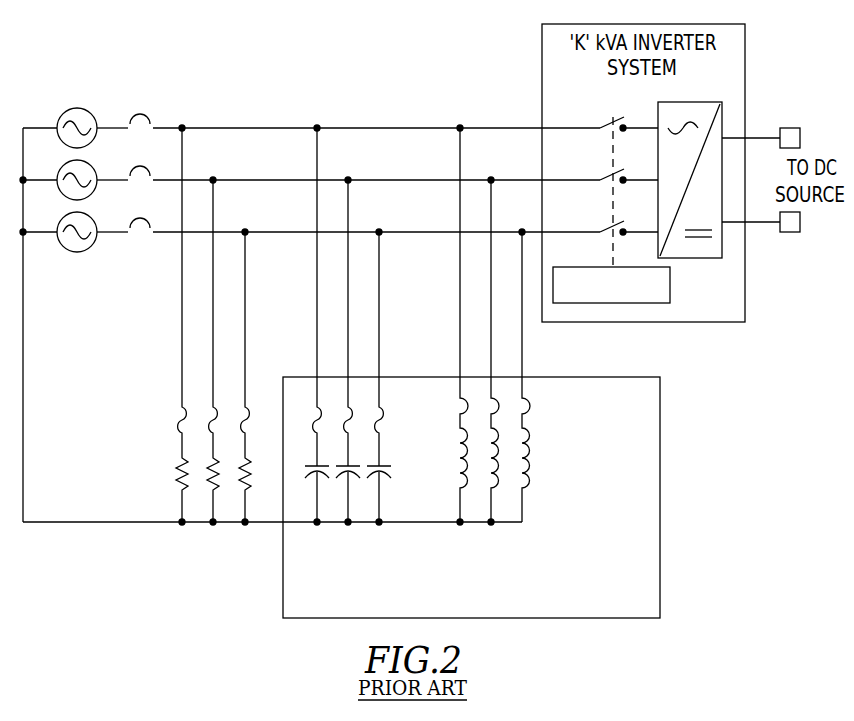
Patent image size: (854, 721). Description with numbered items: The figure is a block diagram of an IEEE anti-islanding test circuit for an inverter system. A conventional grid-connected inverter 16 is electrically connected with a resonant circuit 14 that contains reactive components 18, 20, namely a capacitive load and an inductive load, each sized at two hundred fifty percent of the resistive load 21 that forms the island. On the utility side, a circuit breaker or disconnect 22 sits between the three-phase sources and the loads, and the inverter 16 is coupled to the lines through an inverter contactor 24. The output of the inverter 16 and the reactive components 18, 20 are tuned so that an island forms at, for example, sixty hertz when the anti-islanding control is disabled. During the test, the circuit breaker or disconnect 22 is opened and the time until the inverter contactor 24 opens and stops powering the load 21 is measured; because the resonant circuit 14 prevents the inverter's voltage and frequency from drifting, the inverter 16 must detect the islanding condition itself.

The resonant circuit 14 is at (660, 533).
The inverter 16 is at (722, 102).
The reactive component 18 is at (406, 404).
The reactive component 20 is at (545, 399).
The load 21 is at (166, 402).
The circuit breaker or disconnect 22 is at (160, 100).
The inverter contactor 24 is at (687, 297).